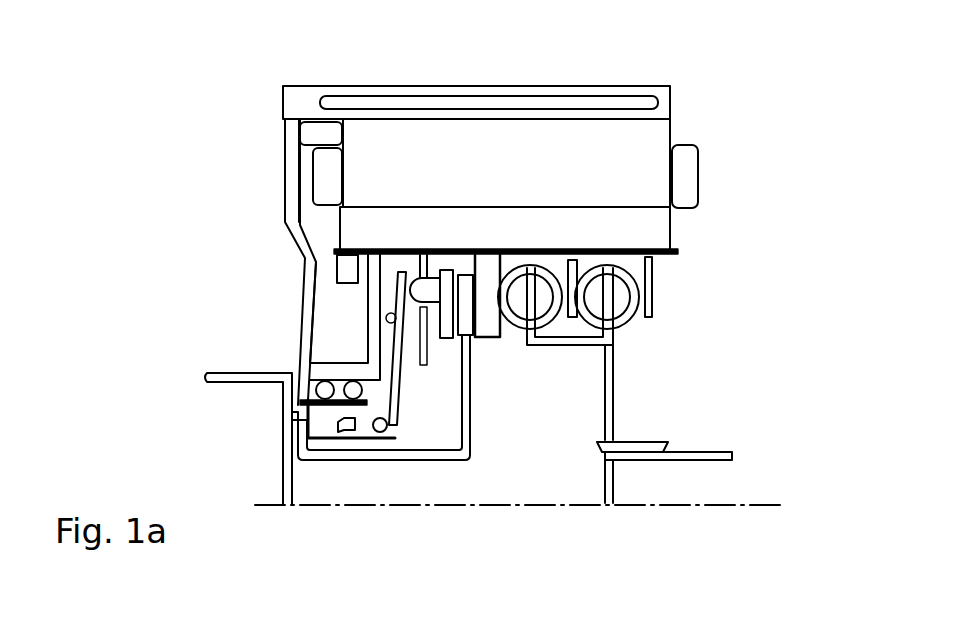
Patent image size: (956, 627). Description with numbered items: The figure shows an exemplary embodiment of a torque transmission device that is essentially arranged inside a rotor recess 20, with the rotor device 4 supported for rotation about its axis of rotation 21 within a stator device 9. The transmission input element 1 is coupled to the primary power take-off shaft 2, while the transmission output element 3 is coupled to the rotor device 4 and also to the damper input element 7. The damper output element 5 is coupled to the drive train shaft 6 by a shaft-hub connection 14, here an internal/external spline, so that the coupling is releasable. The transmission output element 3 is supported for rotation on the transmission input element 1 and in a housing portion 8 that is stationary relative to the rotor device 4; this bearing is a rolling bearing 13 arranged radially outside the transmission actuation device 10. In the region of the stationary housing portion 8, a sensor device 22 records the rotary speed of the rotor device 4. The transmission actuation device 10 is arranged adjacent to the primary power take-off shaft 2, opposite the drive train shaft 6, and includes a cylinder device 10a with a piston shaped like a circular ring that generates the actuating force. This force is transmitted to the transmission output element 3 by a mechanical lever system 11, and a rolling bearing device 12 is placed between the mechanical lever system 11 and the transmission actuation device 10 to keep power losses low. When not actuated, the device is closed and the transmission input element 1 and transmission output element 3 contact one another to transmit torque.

The transmission input element 1 is at (300, 378).
The primary power take-off shaft 2 is at (240, 383).
The transmission output element 3 is at (677, 252).
The rotor device 4 is at (673, 235).
The damper output element 5 is at (612, 353).
The drive train shaft 6 is at (723, 450).
The damper input element 7 is at (655, 292).
The housing portion 8 is at (283, 165).
The stator device 9 is at (583, 137).
The transmission actuation device 10 is at (366, 452).
The cylinder device 10a is at (347, 432).
The mechanical lever system 11 is at (400, 385).
The rolling bearing device 12 is at (403, 407).
The rolling bearing 13 is at (330, 385).
The shaft-hub connection 14 is at (645, 437).
The rotor recess 20 is at (700, 296).
The axis of rotation 21 is at (707, 505).
The sensor device 22 is at (337, 268).